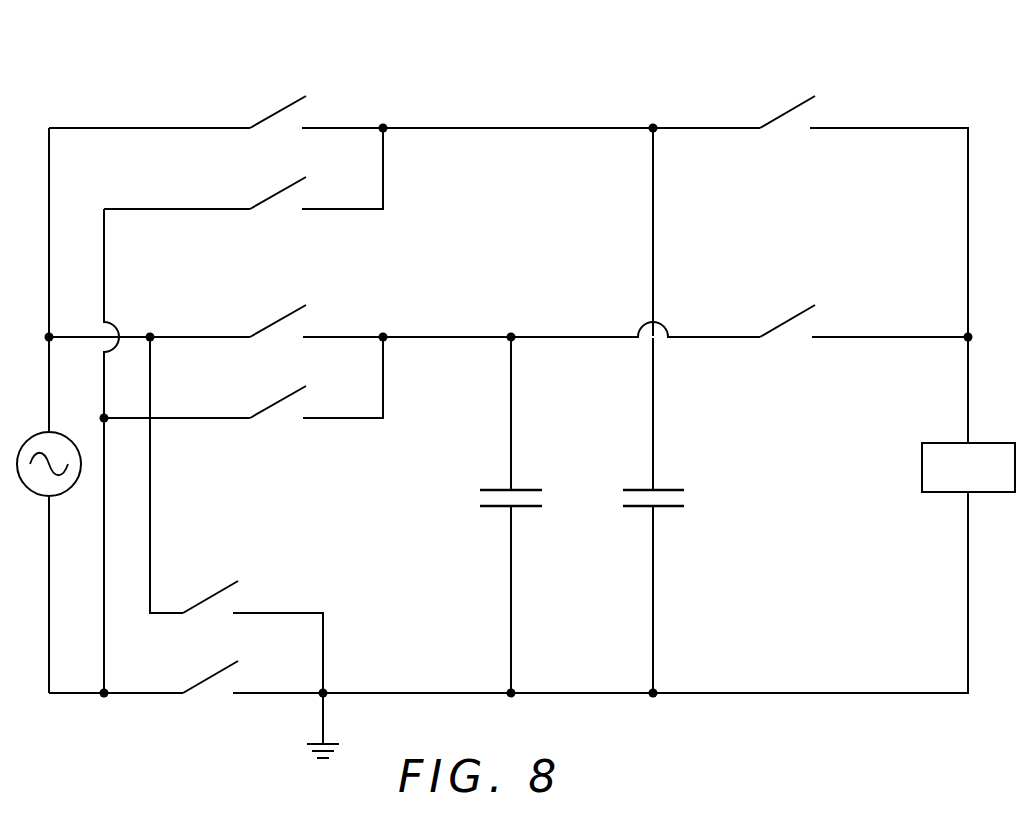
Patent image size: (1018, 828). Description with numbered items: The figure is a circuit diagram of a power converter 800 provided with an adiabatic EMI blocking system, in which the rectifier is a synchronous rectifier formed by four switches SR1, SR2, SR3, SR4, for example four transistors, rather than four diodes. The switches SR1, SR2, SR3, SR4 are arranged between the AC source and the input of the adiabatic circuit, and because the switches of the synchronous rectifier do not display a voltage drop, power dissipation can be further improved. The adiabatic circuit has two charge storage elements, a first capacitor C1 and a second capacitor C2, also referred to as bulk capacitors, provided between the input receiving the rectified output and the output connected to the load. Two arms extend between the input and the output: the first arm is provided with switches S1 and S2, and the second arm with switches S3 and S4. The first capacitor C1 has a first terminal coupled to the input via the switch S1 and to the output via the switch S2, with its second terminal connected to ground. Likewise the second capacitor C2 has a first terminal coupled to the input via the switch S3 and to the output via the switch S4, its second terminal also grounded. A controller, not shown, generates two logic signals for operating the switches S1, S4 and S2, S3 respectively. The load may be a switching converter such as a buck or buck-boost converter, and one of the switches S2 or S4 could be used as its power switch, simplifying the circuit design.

The circuit of the power converter 800 is at (122, 60).
The switch S1 is at (278, 124).
The switch S2 is at (787, 125).
The switch S3 is at (278, 333).
The switch S4 is at (787, 333).
The switch of the synchronous rectifier SR1 is at (278, 207).
The switch of the synchronous rectifier SR2 is at (278, 417).
The switch of the synchronous rectifier SR3 is at (210, 612).
The switch of the synchronous rectifier SR4 is at (210, 693).
The first capacitor C1 is at (664, 485).
The second capacitor C2 is at (522, 485).